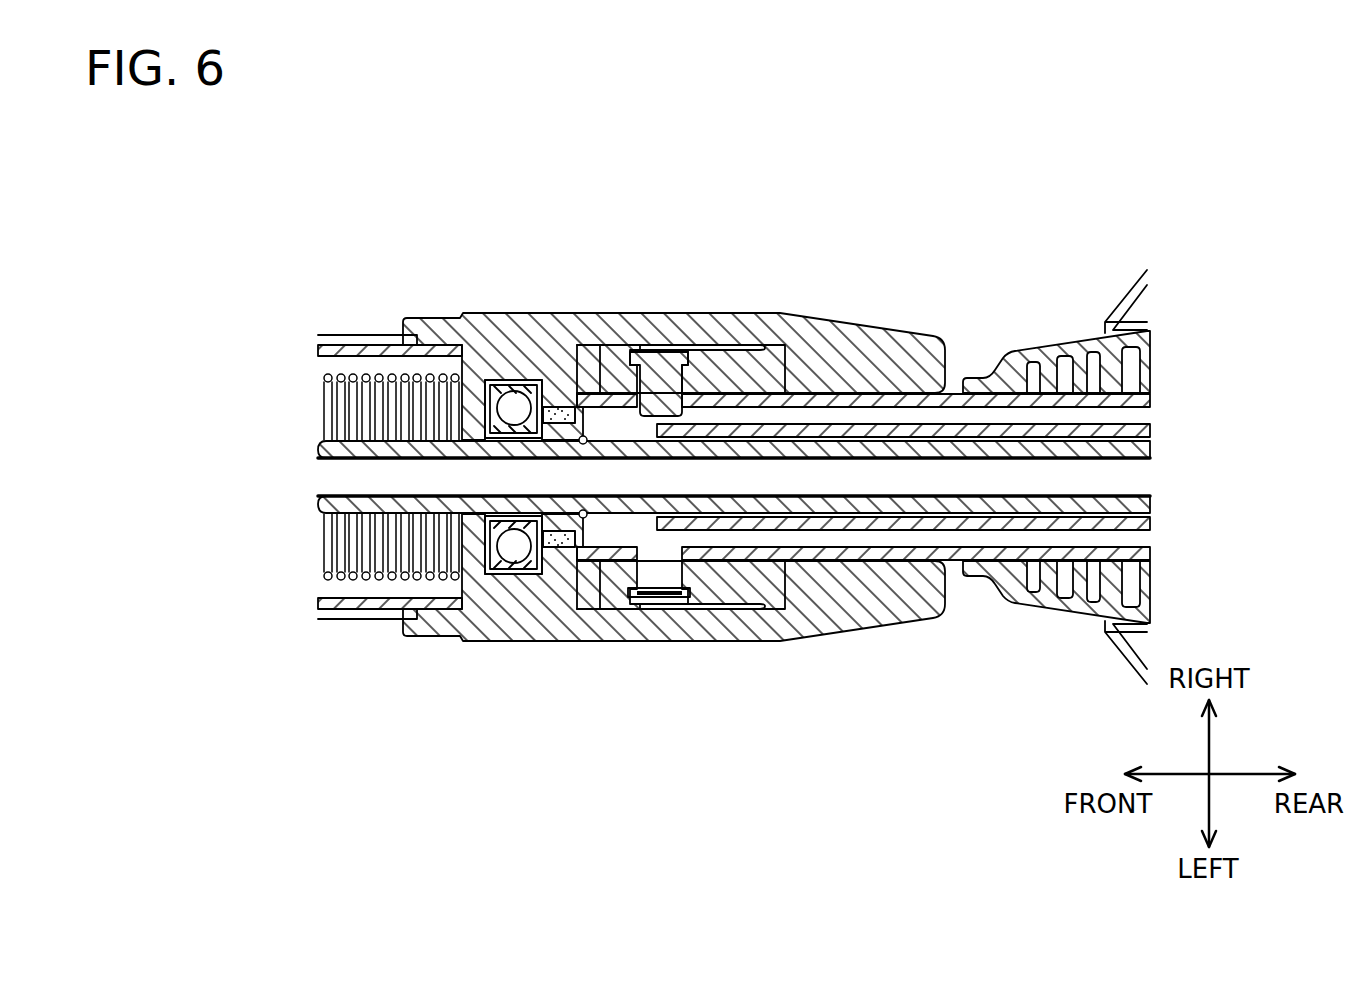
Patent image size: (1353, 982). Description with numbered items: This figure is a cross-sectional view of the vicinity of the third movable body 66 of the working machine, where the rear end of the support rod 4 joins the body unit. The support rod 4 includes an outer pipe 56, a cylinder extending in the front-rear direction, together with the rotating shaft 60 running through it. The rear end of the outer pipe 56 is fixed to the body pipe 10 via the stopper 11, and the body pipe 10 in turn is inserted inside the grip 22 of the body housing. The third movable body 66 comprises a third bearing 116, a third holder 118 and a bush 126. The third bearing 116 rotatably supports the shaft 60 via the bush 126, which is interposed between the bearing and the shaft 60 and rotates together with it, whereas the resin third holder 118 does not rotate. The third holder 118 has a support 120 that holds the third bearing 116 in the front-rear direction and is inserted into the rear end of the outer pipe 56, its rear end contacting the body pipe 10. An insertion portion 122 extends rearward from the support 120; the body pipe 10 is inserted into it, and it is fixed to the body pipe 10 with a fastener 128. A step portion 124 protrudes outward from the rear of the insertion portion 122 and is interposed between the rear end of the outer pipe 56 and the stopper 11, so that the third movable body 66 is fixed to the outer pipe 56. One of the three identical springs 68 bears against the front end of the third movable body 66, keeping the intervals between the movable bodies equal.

The support rod 4 is at (340, 297).
The body pipe 10 is at (800, 557).
The stopper 11 is at (878, 618).
The grip 22 is at (1070, 603).
The outer pipe 56 is at (663, 605).
The shaft 60 is at (627, 500).
The third movable body 66 is at (806, 355).
The spring 68 is at (383, 580).
The third bearing 116 is at (492, 380).
The third holder 118 is at (447, 352).
The support 120 is at (512, 396).
The insertion portion 122 is at (603, 366).
The step portion 124 is at (774, 344).
The bush 126 is at (562, 396).
The fastener 128 is at (651, 366).